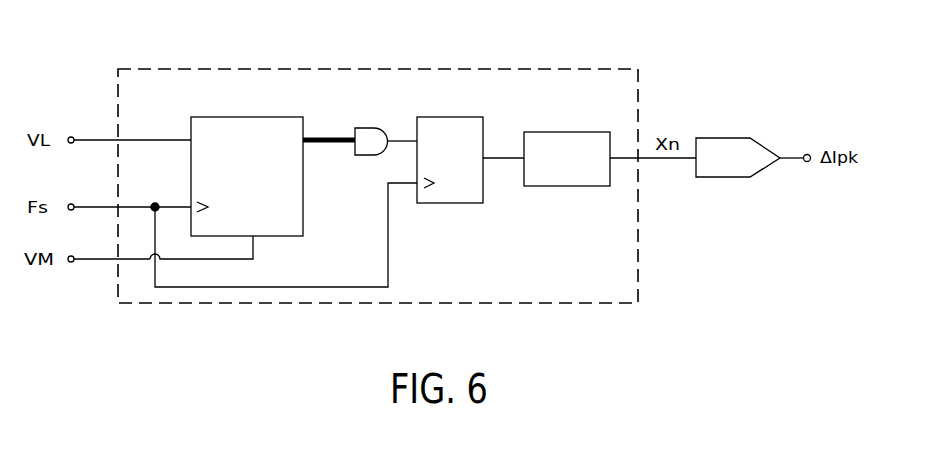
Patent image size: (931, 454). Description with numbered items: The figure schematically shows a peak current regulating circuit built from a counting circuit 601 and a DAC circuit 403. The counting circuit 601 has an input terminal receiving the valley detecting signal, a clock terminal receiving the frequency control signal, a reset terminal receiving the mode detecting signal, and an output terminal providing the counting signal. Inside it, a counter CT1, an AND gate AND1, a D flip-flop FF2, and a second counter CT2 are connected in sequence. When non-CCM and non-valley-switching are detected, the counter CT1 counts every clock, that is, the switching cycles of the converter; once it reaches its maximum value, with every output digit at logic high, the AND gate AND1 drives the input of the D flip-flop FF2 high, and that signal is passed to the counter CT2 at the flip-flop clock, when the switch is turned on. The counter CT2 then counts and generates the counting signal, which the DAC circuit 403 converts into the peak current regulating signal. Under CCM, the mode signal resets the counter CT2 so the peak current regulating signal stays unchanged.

The counting circuit 601 is at (233, 69).
The DAC circuit 403 is at (722, 138).
The counter CT1 is at (247, 165).
The AND gate AND1 is at (373, 129).
The D flip-flop FF2 is at (450, 149).
The counter CT2 is at (567, 148).